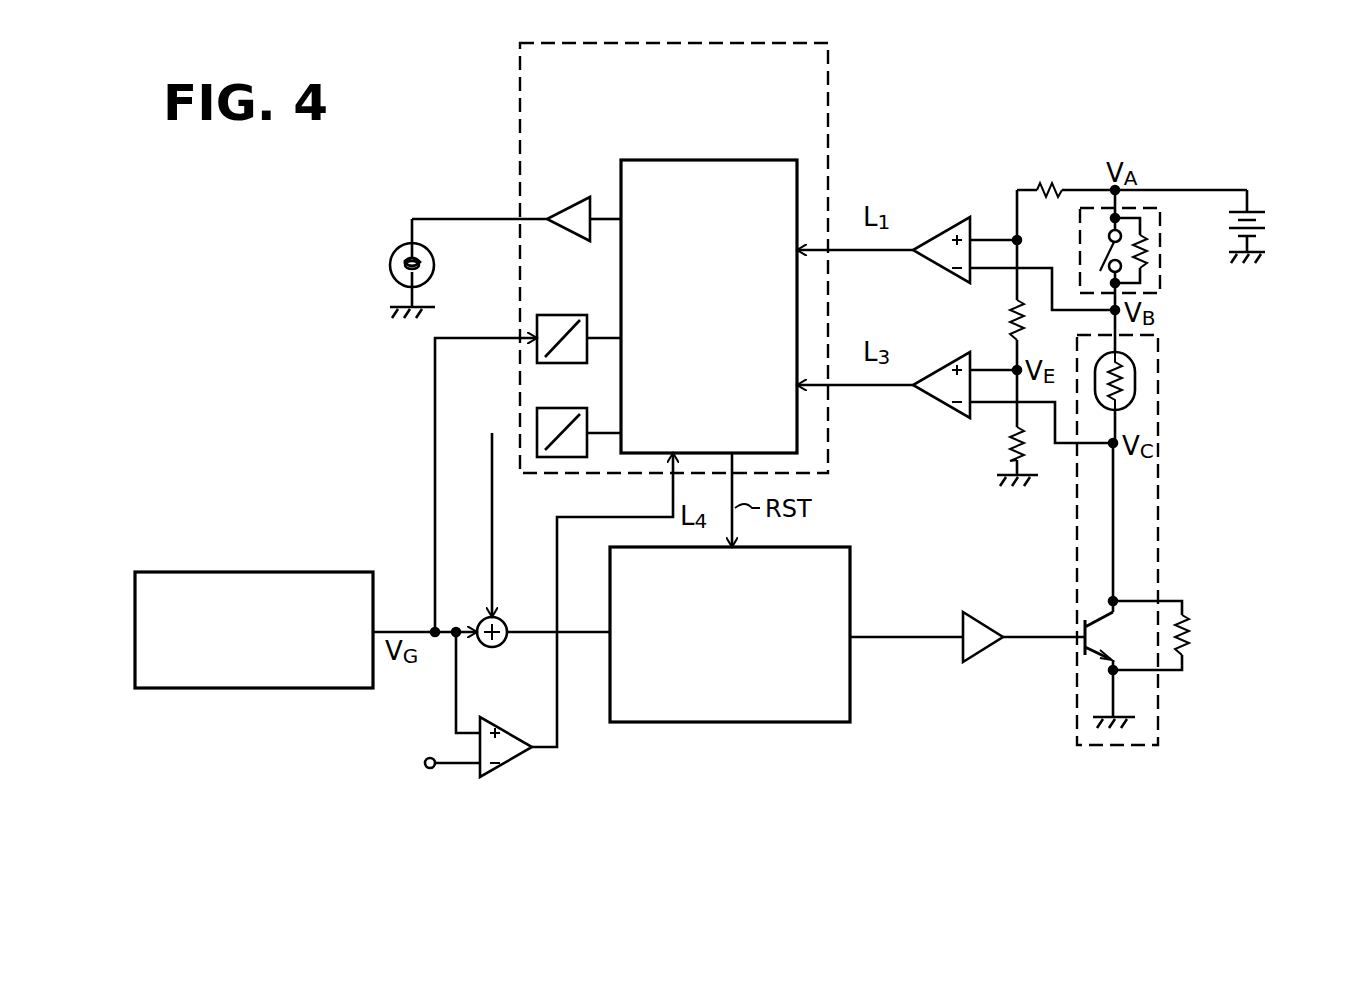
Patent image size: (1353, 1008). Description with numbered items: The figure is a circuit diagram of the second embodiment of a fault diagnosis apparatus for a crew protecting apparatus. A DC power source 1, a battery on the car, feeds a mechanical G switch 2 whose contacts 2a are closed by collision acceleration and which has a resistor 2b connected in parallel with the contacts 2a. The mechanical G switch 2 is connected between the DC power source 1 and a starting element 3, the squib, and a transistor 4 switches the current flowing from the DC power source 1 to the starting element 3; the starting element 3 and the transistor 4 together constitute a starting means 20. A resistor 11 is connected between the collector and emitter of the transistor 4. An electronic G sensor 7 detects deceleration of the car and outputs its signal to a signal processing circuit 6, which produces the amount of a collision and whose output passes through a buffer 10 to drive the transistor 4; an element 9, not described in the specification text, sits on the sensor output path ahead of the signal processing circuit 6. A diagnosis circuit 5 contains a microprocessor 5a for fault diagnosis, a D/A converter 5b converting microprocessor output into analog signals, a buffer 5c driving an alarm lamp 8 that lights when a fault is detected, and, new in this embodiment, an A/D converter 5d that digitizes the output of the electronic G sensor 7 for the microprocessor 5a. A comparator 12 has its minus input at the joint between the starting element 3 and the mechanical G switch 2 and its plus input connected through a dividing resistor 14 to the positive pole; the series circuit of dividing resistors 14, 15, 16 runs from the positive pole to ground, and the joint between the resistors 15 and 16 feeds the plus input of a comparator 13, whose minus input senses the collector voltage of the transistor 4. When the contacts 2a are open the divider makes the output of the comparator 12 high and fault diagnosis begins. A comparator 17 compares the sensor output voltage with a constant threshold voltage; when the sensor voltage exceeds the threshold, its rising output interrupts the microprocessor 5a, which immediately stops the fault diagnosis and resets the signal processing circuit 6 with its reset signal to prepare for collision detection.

The DC power source 1 is at (1268, 218).
The mechanical G switch 2 is at (1162, 290).
The contacts 2a is at (1100, 247).
The resistor 2b is at (1153, 252).
The starting element 3 is at (1135, 362).
The transistor 4 is at (1100, 618).
The diagnosis circuit 5 is at (828, 98).
The microprocessor 5a is at (733, 160).
The D/A converter 5b is at (545, 408).
The buffer 5c is at (567, 207).
The A/D converter 5d is at (550, 315).
The signal processing circuit 6 is at (762, 722).
The electronic G sensor 7 is at (216, 572).
The alarm lamp 8 is at (388, 265).
The adder 9 is at (500, 646).
The buffer 10 is at (990, 652).
The resistor 11 is at (1193, 640).
The comparator 12 is at (945, 238).
The comparator 13 is at (945, 366).
The dividing resistor 14 is at (1043, 185).
The dividing resistor 15 is at (1010, 330).
The dividing resistor 16 is at (1000, 452).
The comparator 17 is at (505, 768).
The starting means 20 is at (1158, 535).